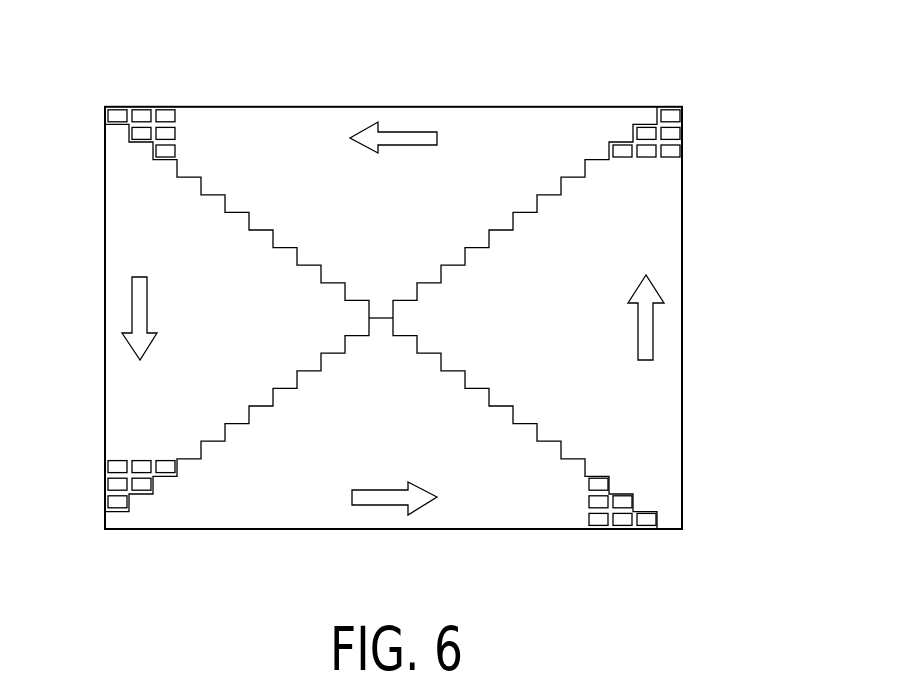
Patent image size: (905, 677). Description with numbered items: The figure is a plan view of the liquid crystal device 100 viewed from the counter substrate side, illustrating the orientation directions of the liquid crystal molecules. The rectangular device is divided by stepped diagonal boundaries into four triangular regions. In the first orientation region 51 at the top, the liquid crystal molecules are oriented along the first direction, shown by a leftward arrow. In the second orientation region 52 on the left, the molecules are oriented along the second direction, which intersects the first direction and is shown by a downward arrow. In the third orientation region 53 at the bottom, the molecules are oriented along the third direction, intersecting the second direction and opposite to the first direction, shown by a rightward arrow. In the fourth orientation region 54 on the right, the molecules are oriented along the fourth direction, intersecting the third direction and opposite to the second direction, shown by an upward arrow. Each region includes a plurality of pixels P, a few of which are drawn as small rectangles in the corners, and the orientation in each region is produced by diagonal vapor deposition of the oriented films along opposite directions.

The liquid crystal device 100 is at (757, 38).
The first orientation region 51 is at (512, 158).
The second orientation region 52 is at (145, 215).
The third orientation region 53 is at (285, 487).
The fourth orientation region 54 is at (643, 238).
The pixel P is at (172, 113).